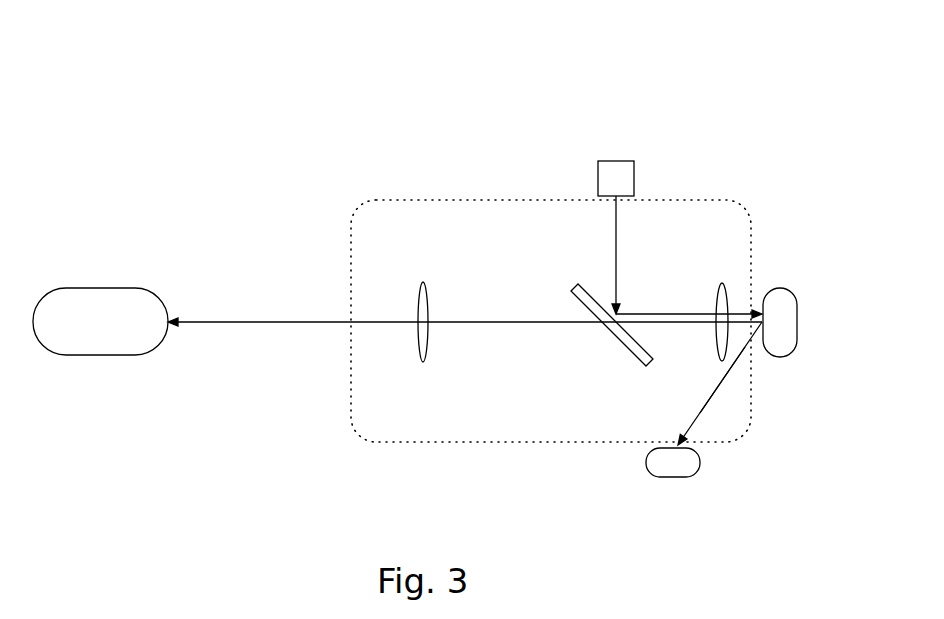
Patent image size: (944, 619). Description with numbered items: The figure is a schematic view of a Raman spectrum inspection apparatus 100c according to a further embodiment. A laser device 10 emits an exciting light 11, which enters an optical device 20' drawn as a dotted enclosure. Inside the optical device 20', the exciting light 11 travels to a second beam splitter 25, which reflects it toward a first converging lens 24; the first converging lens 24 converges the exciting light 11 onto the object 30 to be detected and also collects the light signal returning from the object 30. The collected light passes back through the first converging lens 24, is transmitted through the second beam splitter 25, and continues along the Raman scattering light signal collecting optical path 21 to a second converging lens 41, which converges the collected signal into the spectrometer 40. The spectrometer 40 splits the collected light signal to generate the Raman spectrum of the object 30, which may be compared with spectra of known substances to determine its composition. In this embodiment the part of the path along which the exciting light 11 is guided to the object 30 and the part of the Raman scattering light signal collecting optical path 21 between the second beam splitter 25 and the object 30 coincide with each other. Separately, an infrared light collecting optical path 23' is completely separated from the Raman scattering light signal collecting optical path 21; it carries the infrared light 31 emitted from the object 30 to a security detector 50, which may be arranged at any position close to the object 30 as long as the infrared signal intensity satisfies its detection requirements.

The Raman spectrum inspection apparatus 100c is at (490, 58).
The laser device 10 is at (618, 160).
The exciting light 11 is at (618, 258).
The optical device 20' is at (541, 301).
The Raman scattering light signal collecting optical path 21 is at (355, 330).
The infrared light collecting optical path 23' is at (729, 422).
The first converging lens 24 is at (725, 282).
The second beam splitter 25 is at (622, 343).
The object 30 is at (797, 302).
The infrared light 31 is at (733, 368).
The spectrometer 40 is at (140, 288).
The second converging lens 41 is at (425, 282).
The security detector 50 is at (660, 477).